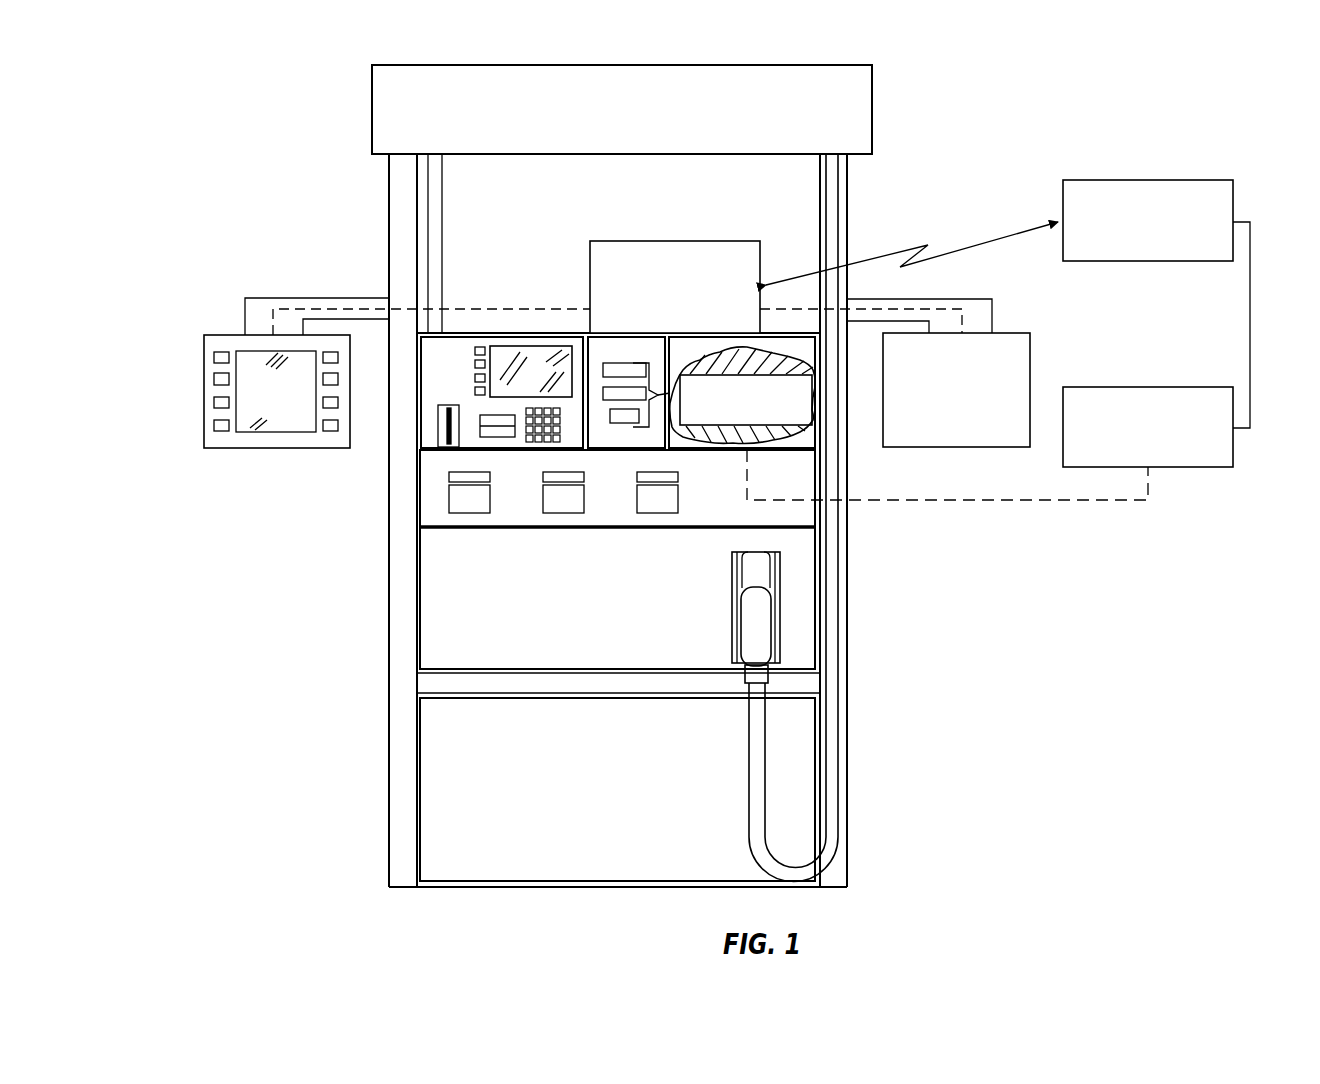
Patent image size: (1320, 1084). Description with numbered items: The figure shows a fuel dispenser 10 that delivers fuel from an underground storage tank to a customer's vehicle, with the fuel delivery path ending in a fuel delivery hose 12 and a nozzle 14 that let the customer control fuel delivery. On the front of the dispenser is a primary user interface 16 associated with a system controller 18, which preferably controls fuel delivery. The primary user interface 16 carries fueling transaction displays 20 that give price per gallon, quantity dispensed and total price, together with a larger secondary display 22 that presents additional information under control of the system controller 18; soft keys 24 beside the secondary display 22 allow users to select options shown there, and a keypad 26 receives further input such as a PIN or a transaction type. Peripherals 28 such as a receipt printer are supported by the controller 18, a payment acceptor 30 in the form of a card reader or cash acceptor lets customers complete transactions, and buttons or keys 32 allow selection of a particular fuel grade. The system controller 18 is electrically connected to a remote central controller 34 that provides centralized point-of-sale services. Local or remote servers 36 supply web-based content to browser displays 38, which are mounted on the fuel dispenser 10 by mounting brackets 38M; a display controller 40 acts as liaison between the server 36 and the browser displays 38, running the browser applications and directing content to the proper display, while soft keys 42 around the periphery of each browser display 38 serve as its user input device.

The fuel dispenser 10 is at (932, 100).
The fuel delivery hose 12 is at (830, 685).
The nozzle 14 is at (760, 618).
The primary user interface 16 is at (432, 359).
The system controller 18 is at (737, 423).
The fueling transaction displays 20 is at (675, 395).
The secondary display 22 is at (521, 382).
The soft keys 24 is at (469, 347).
The keypad 26 is at (545, 433).
The peripherals 28 is at (488, 437).
The payment acceptor 30 is at (447, 433).
The buttons or keys 32 is at (663, 513).
The central controller 34 is at (1137, 461).
The server 36 is at (1137, 243).
The browser displays 38 is at (232, 335).
The mounting brackets 38M is at (268, 298).
The display controller 40 is at (664, 318).
The soft keys 42 is at (222, 403).